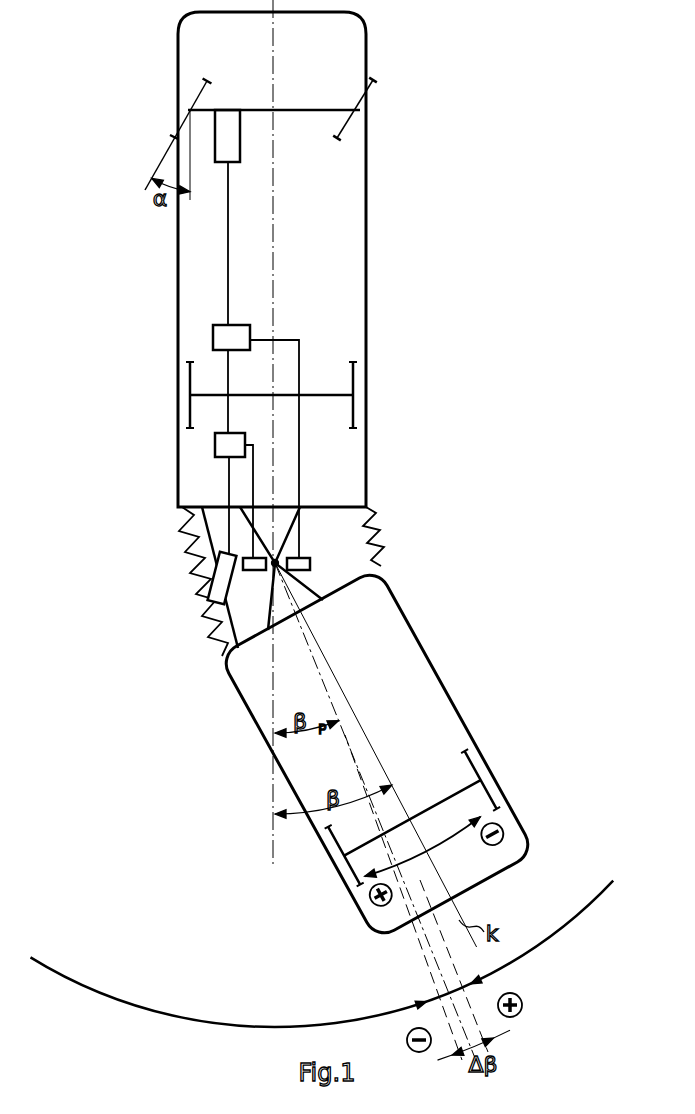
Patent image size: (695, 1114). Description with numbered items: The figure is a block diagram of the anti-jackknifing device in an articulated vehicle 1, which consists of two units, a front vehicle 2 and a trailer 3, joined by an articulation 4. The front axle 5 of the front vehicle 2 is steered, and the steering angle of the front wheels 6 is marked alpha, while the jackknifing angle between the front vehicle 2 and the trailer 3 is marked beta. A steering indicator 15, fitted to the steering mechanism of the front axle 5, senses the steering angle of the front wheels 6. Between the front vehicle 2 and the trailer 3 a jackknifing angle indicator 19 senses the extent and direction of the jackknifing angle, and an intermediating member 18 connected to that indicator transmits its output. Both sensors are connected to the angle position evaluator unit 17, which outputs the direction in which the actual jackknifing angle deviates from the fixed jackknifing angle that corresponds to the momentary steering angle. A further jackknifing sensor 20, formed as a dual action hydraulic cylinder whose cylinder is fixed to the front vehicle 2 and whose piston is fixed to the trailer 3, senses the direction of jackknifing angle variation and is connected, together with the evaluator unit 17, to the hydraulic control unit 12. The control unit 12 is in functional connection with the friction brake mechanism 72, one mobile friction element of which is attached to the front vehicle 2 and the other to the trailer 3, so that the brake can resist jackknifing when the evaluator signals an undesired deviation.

The articulated vehicle 1 is at (246, 259).
The front vehicle 2 is at (353, 195).
The trailer 3 is at (392, 647).
The articulation 4 is at (288, 538).
The front axle 5 is at (313, 108).
The front wheels 6 is at (350, 125).
The hydraulic control unit 12 is at (222, 443).
The steering indicator 15 is at (228, 117).
The angle position evaluator unit 17 is at (225, 333).
The intermediating member 18 is at (299, 455).
The jackknifing angle indicator 19 is at (313, 565).
The jackknifing sensor 20 is at (260, 571).
The friction brake mechanism 72 is at (222, 580).